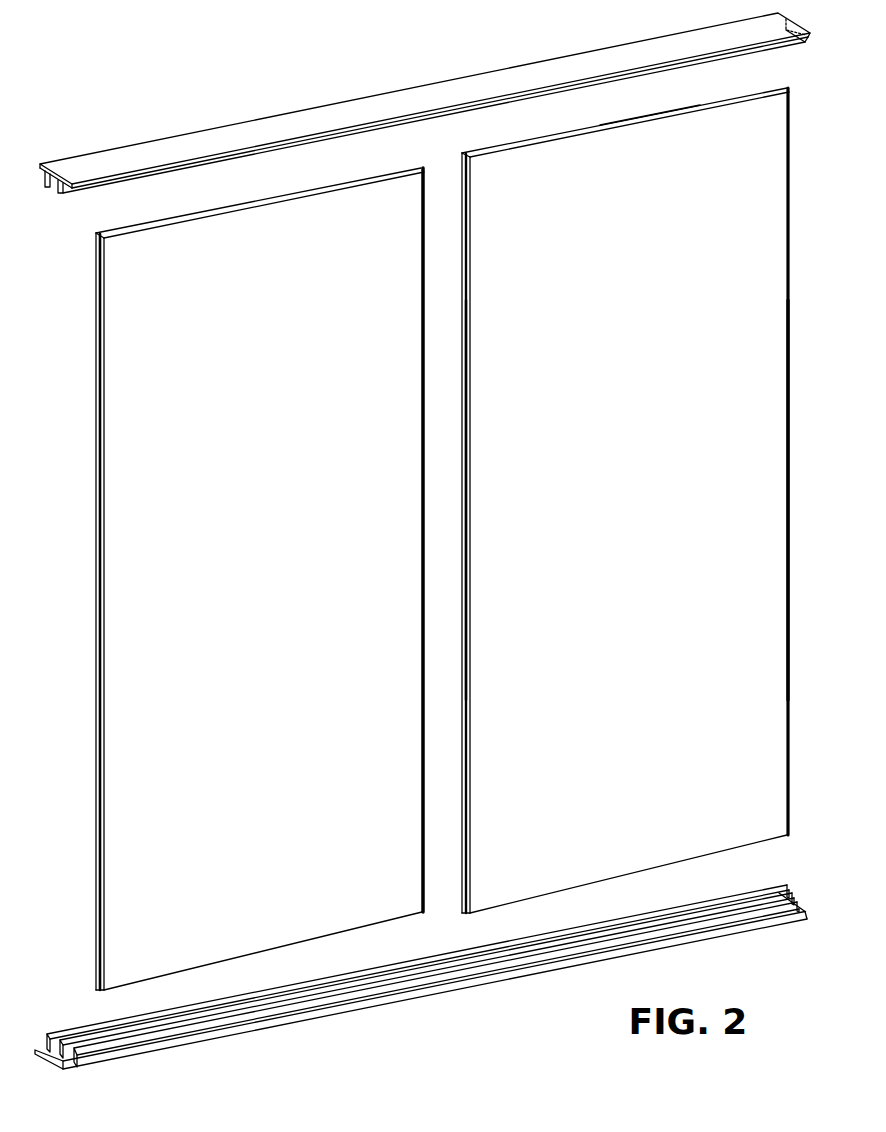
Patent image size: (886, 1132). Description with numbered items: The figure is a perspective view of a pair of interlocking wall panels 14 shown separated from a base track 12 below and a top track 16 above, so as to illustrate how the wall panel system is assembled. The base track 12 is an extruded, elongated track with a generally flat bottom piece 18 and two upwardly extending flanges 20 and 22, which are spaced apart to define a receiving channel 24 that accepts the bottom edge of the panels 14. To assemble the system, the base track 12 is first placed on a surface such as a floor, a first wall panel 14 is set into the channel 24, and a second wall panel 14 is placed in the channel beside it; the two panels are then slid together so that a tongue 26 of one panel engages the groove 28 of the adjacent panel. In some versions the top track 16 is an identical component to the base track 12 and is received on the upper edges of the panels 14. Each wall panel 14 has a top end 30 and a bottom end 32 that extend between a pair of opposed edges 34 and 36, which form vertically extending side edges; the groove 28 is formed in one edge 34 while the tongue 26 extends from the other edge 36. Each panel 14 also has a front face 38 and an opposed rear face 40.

The base track 12 is at (419, 984).
The wall panel 14 is at (462, 521).
The top track 16 is at (210, 137).
The bottom piece 18 is at (66, 1071).
The flange 20 is at (56, 1038).
The flange 22 is at (104, 1050).
The receiving channel 24 is at (78, 1043).
The tongue 26 is at (421, 168).
The groove 28 is at (468, 153).
The top end 30 is at (578, 134).
The bottom end 32 is at (710, 853).
The edge 34 is at (470, 463).
The edge 36 is at (790, 537).
The front face 38 is at (710, 398).
The rear face 40 is at (705, 98).